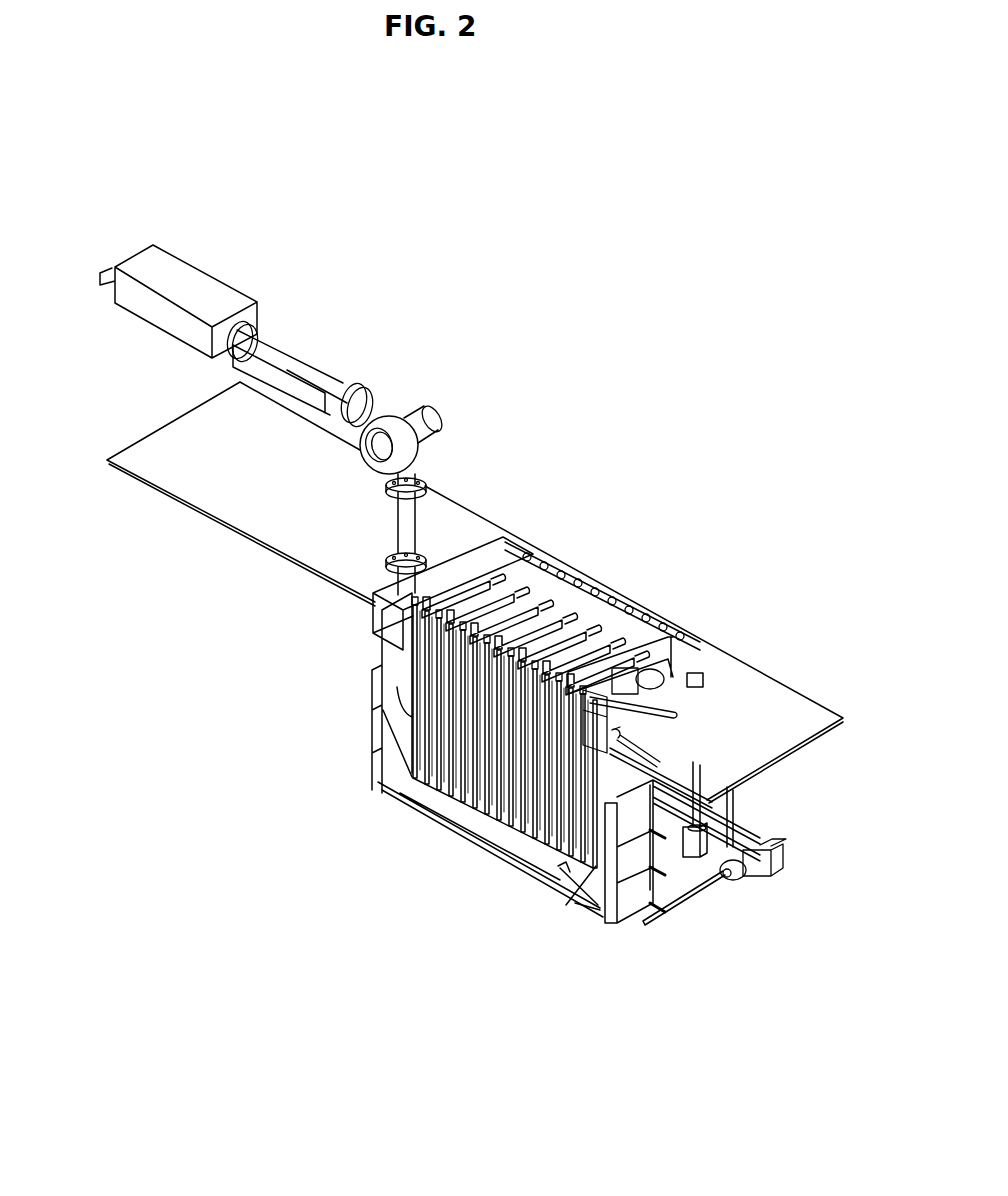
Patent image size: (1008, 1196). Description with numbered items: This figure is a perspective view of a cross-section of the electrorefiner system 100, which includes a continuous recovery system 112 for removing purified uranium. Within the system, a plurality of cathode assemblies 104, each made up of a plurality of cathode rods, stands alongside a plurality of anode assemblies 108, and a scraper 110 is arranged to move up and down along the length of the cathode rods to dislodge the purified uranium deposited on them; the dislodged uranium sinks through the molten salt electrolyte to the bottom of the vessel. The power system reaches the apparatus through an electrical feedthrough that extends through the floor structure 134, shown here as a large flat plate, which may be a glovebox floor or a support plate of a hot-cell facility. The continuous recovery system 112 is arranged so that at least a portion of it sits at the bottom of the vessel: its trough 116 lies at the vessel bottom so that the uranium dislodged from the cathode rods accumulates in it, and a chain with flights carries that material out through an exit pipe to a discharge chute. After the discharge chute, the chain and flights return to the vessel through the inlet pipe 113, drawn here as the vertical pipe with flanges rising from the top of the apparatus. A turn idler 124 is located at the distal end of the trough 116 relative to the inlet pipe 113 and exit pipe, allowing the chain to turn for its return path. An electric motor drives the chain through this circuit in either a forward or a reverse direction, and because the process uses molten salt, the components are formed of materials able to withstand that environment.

The electrorefiner system 100 is at (464, 171).
The cathode assemblies 104 is at (557, 590).
The anode assemblies 108 is at (600, 610).
The scraper 110 is at (593, 782).
The continuous recovery system 112 is at (440, 410).
The inlet pipe 113 is at (413, 530).
The trough 116 is at (495, 825).
The turn idler 124 is at (590, 905).
The floor structure 134 is at (797, 712).